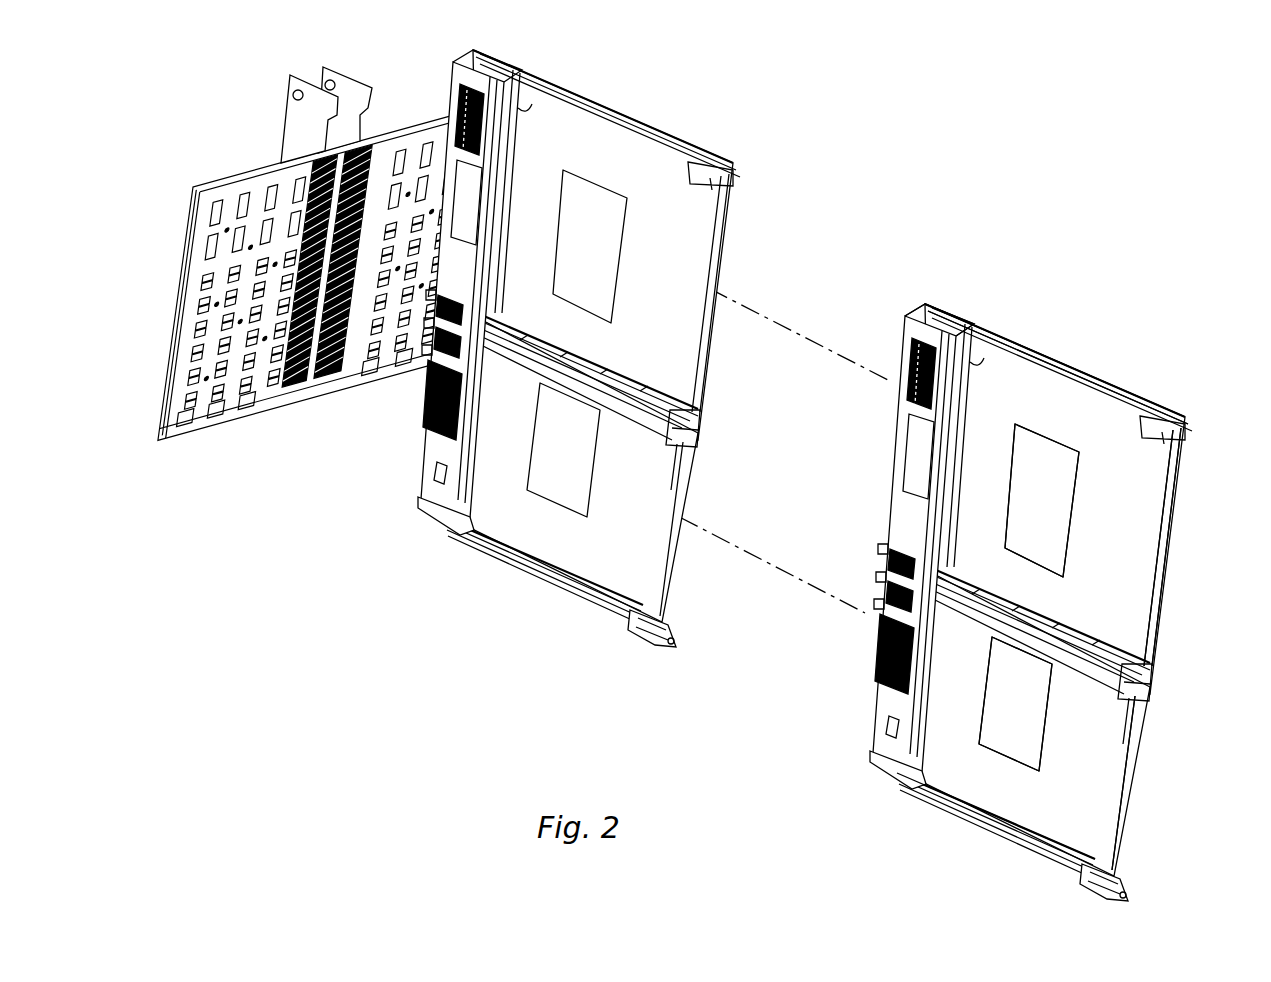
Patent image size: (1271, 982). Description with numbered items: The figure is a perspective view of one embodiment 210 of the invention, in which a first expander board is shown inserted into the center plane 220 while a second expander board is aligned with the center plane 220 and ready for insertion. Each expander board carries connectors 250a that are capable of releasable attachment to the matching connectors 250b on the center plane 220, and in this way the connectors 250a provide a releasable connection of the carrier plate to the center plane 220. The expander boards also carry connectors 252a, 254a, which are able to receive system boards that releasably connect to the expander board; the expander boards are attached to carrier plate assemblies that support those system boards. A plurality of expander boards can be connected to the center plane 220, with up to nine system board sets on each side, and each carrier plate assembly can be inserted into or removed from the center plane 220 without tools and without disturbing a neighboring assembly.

The circuit board assembly 210 is at (690, 461).
The center plane 220 is at (193, 172).
The connectors 250a is at (870, 585).
The matching connectors 250b is at (222, 395).
The connector 252a is at (518, 108).
The connector 254a is at (482, 396).